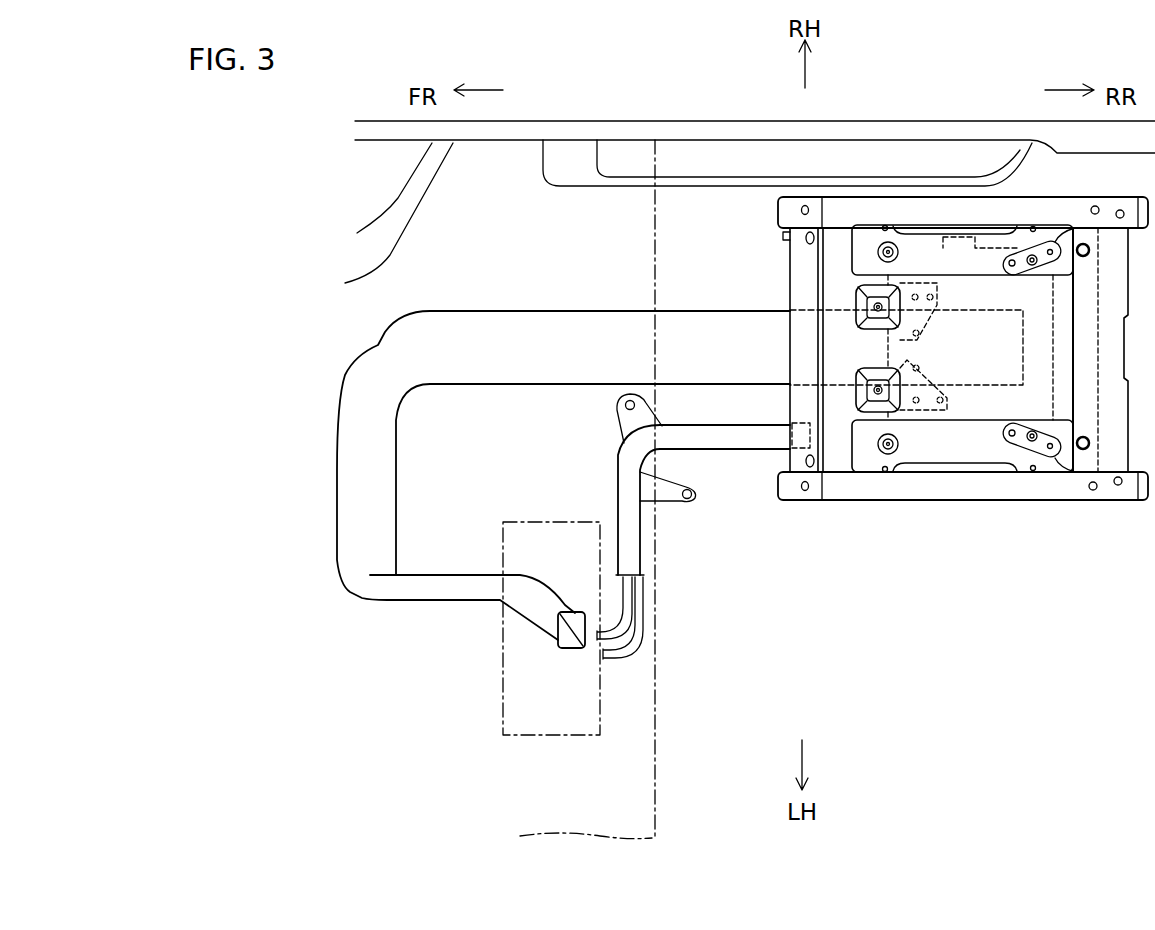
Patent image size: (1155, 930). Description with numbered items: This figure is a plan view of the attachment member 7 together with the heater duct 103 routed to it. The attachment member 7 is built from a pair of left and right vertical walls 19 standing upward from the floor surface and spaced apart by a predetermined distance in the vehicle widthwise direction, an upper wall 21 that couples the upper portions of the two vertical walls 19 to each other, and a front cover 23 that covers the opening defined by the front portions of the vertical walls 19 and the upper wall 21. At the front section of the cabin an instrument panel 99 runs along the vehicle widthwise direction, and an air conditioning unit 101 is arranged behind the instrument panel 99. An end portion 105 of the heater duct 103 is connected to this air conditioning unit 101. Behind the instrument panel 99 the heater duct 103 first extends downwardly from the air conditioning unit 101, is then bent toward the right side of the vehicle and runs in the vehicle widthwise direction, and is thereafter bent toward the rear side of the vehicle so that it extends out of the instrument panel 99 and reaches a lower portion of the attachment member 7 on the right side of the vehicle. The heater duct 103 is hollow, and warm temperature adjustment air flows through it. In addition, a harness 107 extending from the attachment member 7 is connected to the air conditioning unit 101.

The attachment member 7 is at (926, 346).
The vertical walls 19 is at (922, 490).
The upper wall 21 is at (838, 257).
The front cover 23 is at (800, 275).
The instrument panel 99 is at (654, 790).
The air conditioning unit 101 is at (500, 670).
The heater duct 103 is at (335, 473).
The end portion 105 is at (568, 640).
The harness 107 is at (728, 447).